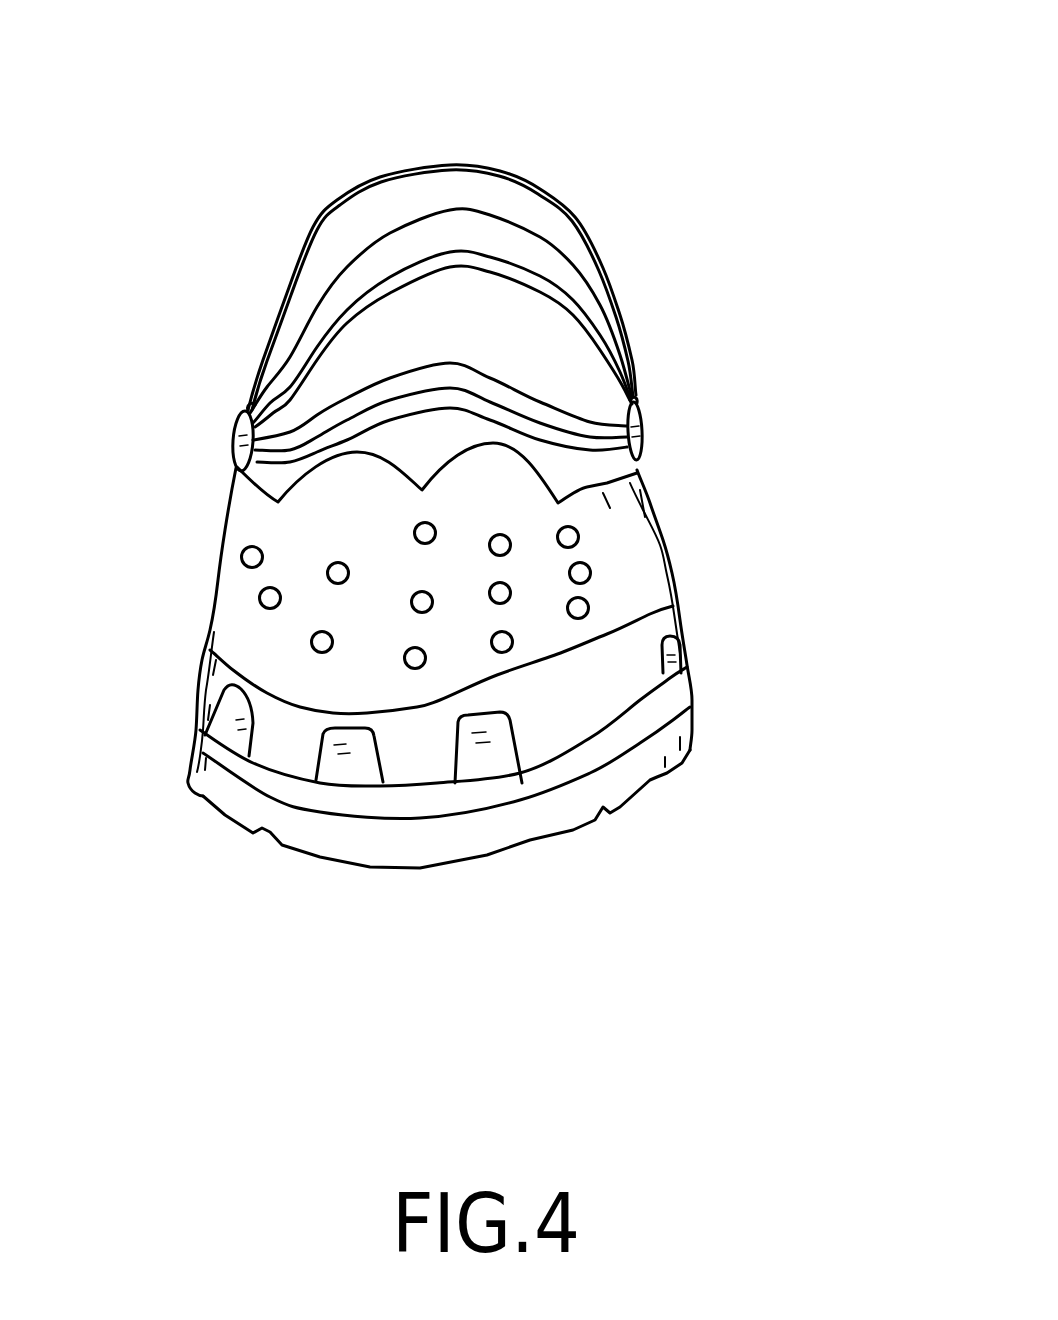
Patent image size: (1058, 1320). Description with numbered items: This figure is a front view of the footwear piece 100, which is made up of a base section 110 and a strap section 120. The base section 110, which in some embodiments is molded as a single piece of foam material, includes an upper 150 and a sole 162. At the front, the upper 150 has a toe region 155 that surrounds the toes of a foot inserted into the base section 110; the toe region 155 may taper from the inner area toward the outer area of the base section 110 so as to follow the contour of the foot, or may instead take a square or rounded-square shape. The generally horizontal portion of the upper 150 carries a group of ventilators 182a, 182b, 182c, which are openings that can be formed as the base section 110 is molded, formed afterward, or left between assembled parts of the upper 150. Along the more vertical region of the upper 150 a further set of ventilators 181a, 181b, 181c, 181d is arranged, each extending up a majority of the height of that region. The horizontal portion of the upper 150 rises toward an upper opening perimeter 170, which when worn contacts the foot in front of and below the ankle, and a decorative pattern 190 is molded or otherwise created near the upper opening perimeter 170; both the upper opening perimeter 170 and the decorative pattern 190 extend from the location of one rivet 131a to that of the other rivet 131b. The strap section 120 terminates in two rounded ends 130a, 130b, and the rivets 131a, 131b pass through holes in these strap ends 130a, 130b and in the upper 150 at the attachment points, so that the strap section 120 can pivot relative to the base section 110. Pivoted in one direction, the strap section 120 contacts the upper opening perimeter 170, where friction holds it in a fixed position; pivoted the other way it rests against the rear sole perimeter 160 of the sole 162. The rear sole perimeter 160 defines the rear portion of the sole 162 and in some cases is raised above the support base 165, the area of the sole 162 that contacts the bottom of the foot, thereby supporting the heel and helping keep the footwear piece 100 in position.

The footwear piece 100 is at (668, 148).
The base section 110 is at (765, 560).
The strap section 120 is at (288, 228).
The rounded strap end 130a is at (643, 443).
The rounded strap end 130b is at (232, 457).
The rivet 131a is at (643, 423).
The rivet 131b is at (237, 423).
The upper 150 is at (520, 515).
The toe region 155 is at (637, 688).
The rear sole perimeter 160 is at (502, 167).
The sole 162 is at (615, 793).
The support base 165 is at (468, 340).
The upper opening perimeter 170 is at (285, 415).
The ventilator 181a is at (230, 728).
The ventilator 181b is at (353, 760).
The ventilator 181c is at (483, 760).
The ventilator 181d is at (678, 650).
The ventilator 182a is at (241, 558).
The ventilator 182b is at (259, 598).
The ventilator 182c is at (311, 644).
The decorative pattern 190 is at (450, 453).